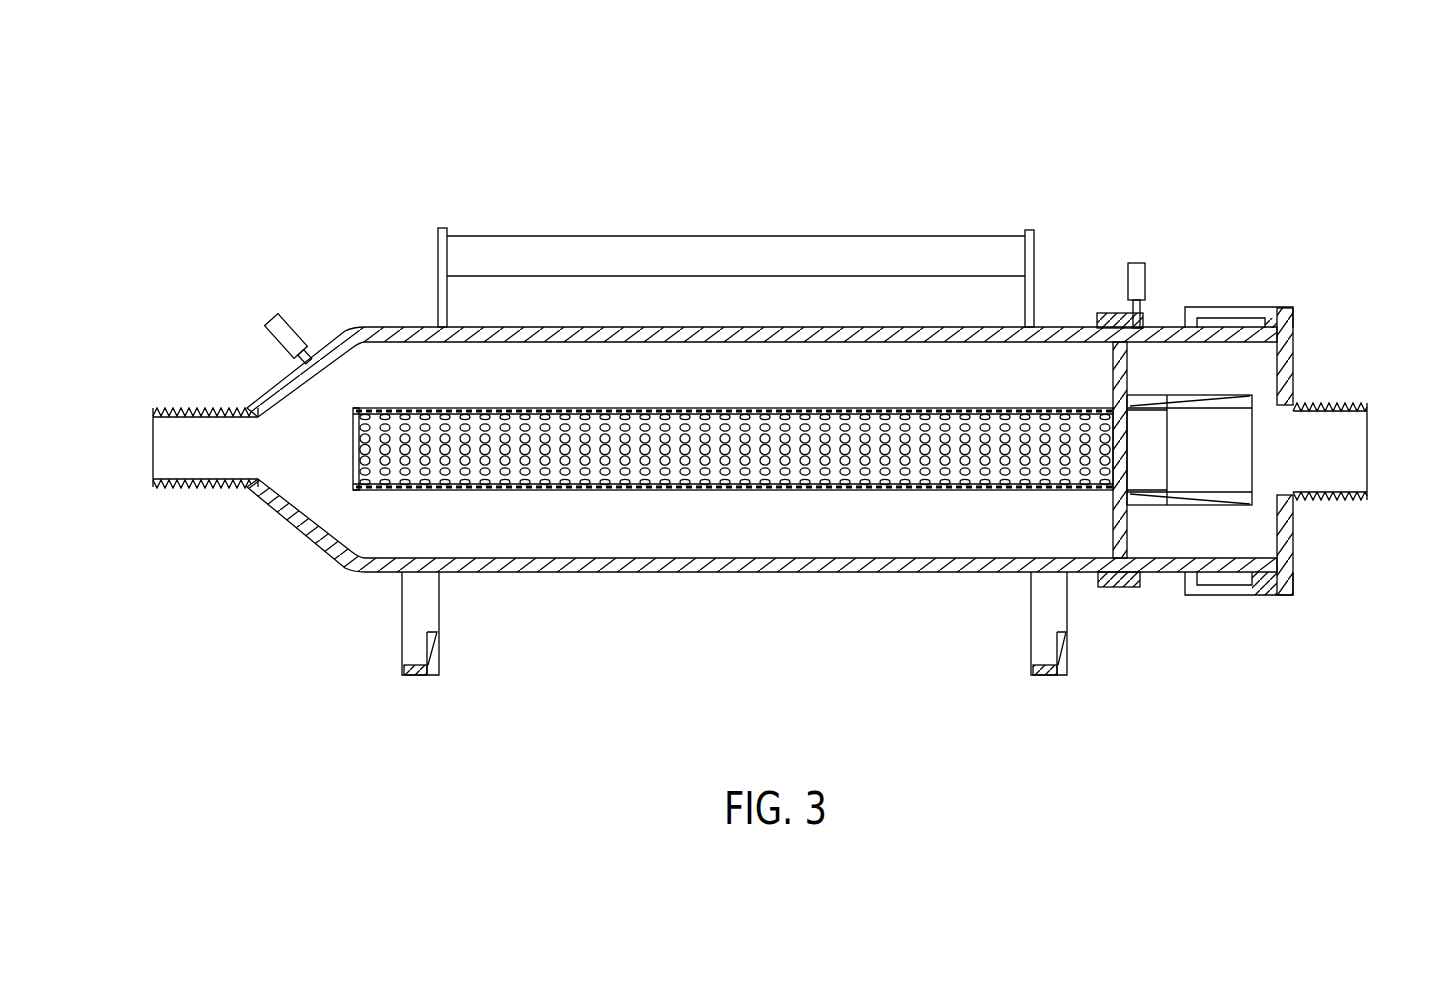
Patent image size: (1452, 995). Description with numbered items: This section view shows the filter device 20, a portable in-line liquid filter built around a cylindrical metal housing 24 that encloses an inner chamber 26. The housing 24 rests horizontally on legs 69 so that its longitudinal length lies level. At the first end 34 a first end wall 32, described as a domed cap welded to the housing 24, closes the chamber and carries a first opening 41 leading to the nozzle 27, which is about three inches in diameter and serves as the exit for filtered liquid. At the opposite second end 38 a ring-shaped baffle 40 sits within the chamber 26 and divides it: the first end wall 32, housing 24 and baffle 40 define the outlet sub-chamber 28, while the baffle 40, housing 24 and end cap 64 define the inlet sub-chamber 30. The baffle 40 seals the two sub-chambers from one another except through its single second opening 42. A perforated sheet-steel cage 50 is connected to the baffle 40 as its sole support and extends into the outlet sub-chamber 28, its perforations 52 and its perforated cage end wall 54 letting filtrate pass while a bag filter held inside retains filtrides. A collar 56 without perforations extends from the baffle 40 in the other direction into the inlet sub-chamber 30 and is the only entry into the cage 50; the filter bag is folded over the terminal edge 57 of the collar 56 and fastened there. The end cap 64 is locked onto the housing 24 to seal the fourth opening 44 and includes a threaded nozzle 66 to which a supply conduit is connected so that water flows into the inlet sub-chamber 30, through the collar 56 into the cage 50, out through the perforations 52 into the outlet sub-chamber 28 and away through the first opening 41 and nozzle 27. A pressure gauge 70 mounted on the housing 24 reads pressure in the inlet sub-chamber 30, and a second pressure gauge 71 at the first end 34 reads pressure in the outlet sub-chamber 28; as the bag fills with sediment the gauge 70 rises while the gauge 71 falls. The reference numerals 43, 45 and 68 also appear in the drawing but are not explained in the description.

The filter device 20 is at (1172, 145).
The housing 24 is at (751, 390).
The inner chamber 26 is at (932, 356).
The nozzle 27 is at (202, 406).
The outlet sub-chamber 28 is at (575, 380).
The inlet sub-chamber 30 is at (1224, 372).
The first end wall 32 is at (302, 522).
The first end 34 is at (742, 238).
The second end 38 is at (1047, 222).
The baffle 40 is at (1108, 368).
The first opening 41 is at (135, 441).
The second opening 42 is at (1132, 436).
The outlet passage 43 is at (1258, 466).
The fourth opening 44 is at (1282, 357).
The outlet flow direction 45 is at (1377, 446).
The cage 50 is at (705, 448).
The perforations 52 is at (842, 420).
The cage end wall 54 is at (352, 425).
The collar 56 is at (1227, 454).
The terminal edge 57 is at (1255, 499).
The end cap 64 is at (1286, 308).
The nozzle 66 is at (1356, 405).
The bracket bar 68 is at (574, 246).
The legs 69 is at (434, 617).
The pressure gauge 70 is at (1136, 263).
The pressure gauge 71 is at (283, 320).